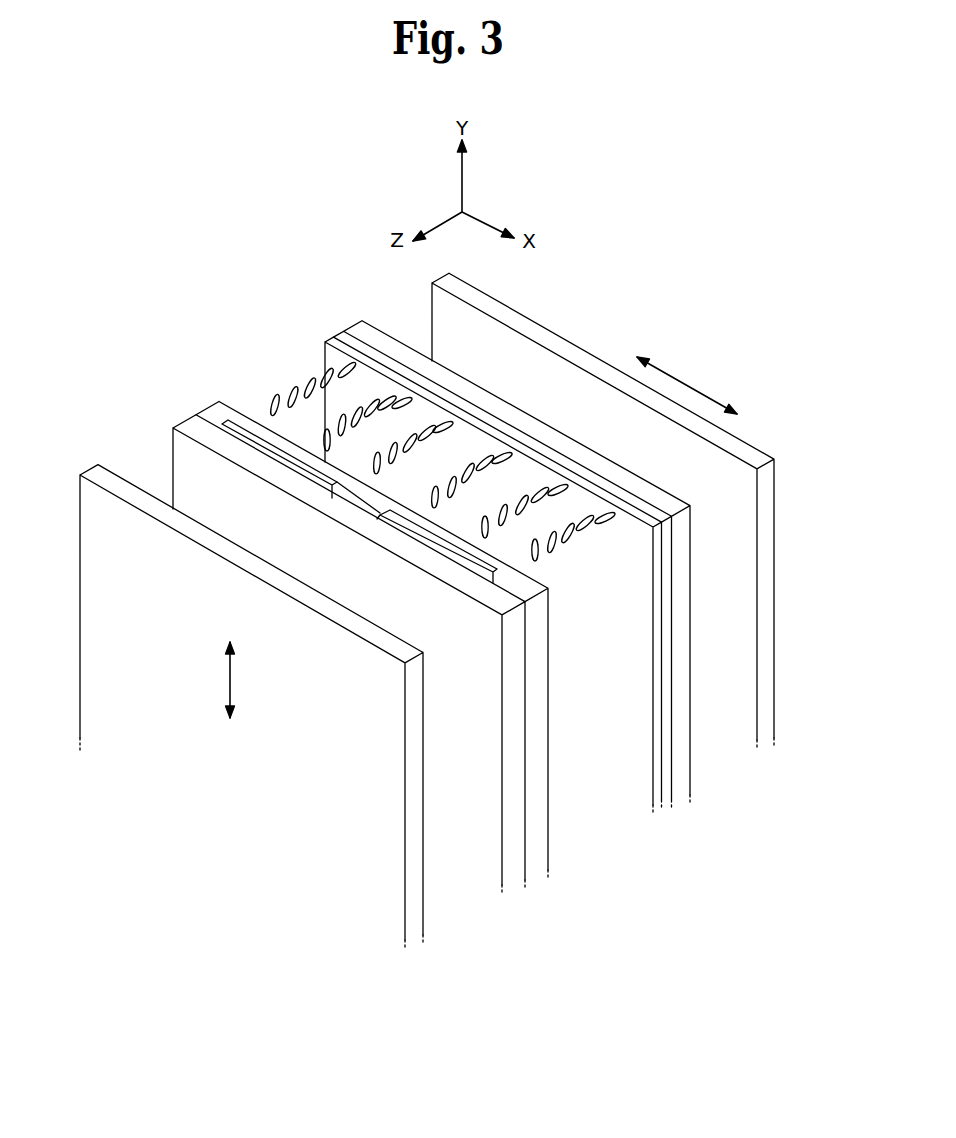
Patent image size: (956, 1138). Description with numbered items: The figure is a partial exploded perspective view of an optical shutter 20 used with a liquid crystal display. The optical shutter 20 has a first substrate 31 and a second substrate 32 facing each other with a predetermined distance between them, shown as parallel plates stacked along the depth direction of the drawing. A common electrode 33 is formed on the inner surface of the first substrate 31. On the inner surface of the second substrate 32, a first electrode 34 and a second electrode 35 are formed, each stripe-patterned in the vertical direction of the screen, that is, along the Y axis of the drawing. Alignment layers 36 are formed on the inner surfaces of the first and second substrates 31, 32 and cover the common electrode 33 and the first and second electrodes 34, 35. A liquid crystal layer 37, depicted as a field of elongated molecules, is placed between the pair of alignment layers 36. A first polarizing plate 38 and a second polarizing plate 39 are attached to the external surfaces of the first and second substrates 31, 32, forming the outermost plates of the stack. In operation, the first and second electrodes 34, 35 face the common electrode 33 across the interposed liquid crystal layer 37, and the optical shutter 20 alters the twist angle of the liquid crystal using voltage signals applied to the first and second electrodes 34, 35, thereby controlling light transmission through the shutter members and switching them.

The optical shutter 20 is at (114, 801).
The first substrate 31 is at (364, 320).
The second substrate 32 is at (178, 428).
The common electrode 33 is at (668, 748).
The first electrode 34 is at (227, 421).
The second electrode 35 is at (452, 553).
The alignment layers 36 is at (325, 358).
The liquid crystal layer 37 is at (463, 457).
The first polarizing plate 38 is at (775, 530).
The second polarizing plate 39 is at (97, 474).